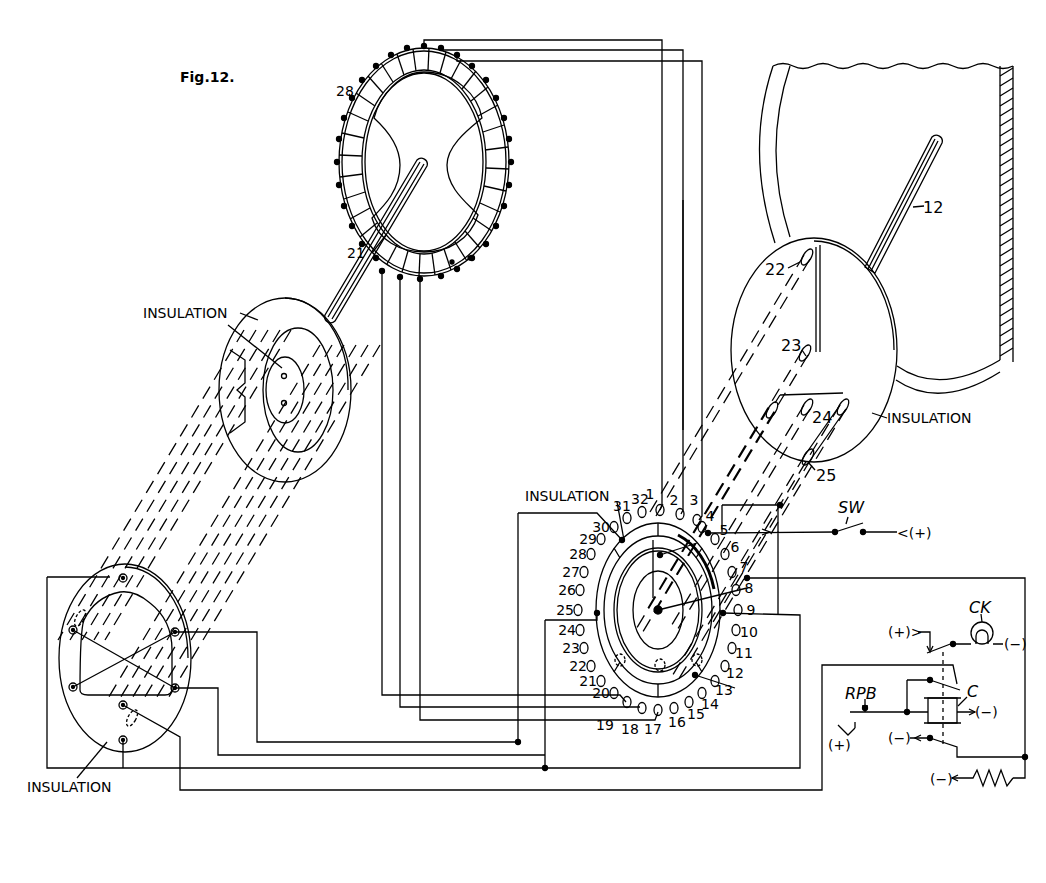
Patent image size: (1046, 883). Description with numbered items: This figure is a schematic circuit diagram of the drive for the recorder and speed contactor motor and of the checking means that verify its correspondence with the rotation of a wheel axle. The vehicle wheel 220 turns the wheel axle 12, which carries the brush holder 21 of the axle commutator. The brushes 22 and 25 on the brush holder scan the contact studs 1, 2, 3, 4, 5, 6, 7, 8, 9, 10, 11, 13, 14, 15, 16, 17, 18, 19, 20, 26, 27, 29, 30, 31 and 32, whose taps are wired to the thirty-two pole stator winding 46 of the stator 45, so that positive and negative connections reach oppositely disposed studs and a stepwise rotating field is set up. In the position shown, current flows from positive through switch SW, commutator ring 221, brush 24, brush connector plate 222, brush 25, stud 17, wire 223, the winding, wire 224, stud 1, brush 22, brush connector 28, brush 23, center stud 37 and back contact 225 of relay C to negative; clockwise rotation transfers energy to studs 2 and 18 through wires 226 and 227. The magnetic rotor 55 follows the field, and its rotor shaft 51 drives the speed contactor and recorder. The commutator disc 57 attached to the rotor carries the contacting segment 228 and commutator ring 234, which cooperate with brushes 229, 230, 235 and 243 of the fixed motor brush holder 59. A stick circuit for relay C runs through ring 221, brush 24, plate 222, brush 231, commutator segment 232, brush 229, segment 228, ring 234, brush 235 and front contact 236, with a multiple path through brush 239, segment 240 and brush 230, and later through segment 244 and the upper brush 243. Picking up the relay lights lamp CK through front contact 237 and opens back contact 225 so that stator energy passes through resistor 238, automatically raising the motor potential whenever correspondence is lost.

The contact stud 1 is at (424, 46).
The contact stud 2 is at (441, 48).
The contact stud 3 is at (457, 55).
The contact stud 4 is at (472, 66).
The contact stud 5 is at (486, 80).
The contact stud 6 is at (496, 98).
The contact stud 7 is at (504, 118).
The contact stud 8 is at (509, 139).
The contact stud 9 is at (511, 162).
The contact stud 10 is at (509, 185).
The contact stud 11 is at (504, 206).
The wheel axle 12 is at (496, 226).
The contact stud 13 is at (486, 244).
The contact stud 14 is at (472, 258).
The contact stud 15 is at (457, 269).
The contact stud 16 is at (441, 276).
The contact stud 17 is at (420, 279).
The contact stud 18 is at (400, 277).
The contact stud 19 is at (382, 271).
The contact stud 20 is at (376, 258).
The brush holder 21 is at (887, 306).
The brush 22 is at (352, 226).
The brush 23 is at (344, 206).
The brush 24 is at (339, 185).
The brush 25 is at (337, 162).
The contact stud 26 is at (339, 139).
The contact stud 27 is at (344, 118).
The brush connector 28 is at (820, 302).
The contact stud 29 is at (362, 80).
The contact stud 30 is at (376, 66).
The contact stud 31 is at (391, 55).
The contact stud 32 is at (407, 48).
The center stud 37 is at (640, 598).
The stator 45 is at (464, 256).
The stator winding 46 is at (452, 265).
The rotor shaft 51 is at (343, 297).
The magnetic rotor 55 is at (446, 127).
The commutator disc 57 is at (290, 300).
The motor brush holder 59 is at (152, 584).
The wheel 220 is at (977, 360).
The commutator ring 221 is at (660, 508).
The brush connector plate 222 is at (830, 427).
The wire 223 is at (421, 394).
The wire 224 is at (662, 203).
The back contact 225 is at (938, 745).
The wire 226 is at (401, 440).
The wire 227 is at (682, 337).
The contacting segment 228 is at (229, 376).
The brush 229 is at (72, 686).
The brush 230 is at (73, 628).
The brush 231 is at (838, 400).
The commutator segment 232 is at (729, 688).
The commutator ring 234 is at (305, 432).
The brush 235 is at (121, 700).
The front contact 236 is at (957, 686).
The front contact 237 is at (943, 646).
The resistor 238 is at (992, 781).
The brush 239 is at (774, 406).
The commutator segment 240 is at (614, 662).
The brush 243 is at (122, 572).
The segment 244 is at (518, 641).